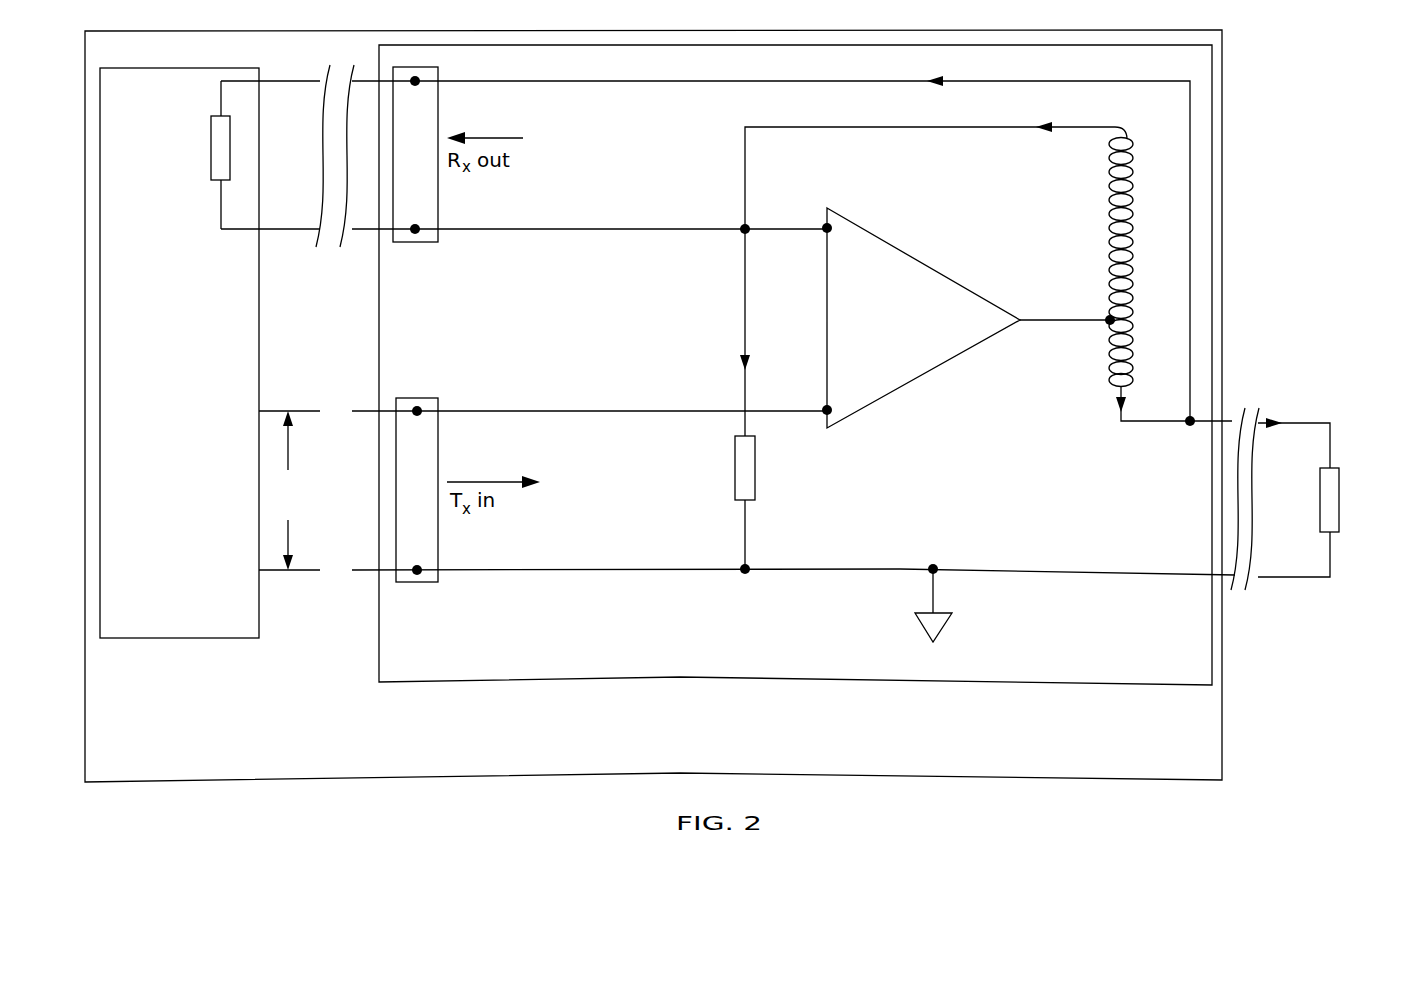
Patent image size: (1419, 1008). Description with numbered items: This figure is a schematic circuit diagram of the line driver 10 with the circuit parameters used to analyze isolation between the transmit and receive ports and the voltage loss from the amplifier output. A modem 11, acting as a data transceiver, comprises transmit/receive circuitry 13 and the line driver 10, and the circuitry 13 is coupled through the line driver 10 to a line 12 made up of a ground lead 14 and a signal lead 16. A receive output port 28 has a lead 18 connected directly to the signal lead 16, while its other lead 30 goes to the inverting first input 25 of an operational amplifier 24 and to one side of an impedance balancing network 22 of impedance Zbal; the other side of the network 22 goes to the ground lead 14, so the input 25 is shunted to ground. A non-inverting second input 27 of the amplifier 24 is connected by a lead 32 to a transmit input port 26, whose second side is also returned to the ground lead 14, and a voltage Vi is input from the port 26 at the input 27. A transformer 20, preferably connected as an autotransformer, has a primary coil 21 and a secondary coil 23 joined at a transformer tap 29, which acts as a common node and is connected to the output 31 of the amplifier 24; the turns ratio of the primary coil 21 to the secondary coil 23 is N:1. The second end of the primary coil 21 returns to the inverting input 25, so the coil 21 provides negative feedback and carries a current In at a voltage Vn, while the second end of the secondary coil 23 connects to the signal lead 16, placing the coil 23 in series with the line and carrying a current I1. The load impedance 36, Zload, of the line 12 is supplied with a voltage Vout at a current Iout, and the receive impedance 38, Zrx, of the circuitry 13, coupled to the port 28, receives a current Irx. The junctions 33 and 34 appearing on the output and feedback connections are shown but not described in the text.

The line driver 10 is at (863, 679).
The modem 11 is at (867, 773).
The line 12 is at (1335, 490).
The transmit/receive circuitry 13 is at (198, 339).
The ground lead 14 is at (1143, 575).
The signal lead 16 is at (1202, 430).
The lead 18 is at (511, 79).
The transformer 20 is at (1114, 287).
The primary coil 21 is at (1135, 182).
The impedance balancing network 22 is at (755, 475).
The secondary coil 23 is at (1130, 354).
The operational amplifier 24 is at (948, 339).
The inverting first input 25 is at (823, 229).
The transmit input port 26 is at (417, 582).
The non-inverting second input 27 is at (826, 412).
The receive output port 28 is at (415, 243).
The transformer tap 29 is at (1110, 319).
The lead 30 is at (566, 232).
The output 31 is at (1021, 322).
The lead 32 is at (578, 408).
The output node 33 is at (1185, 422).
The feedback node 34 is at (744, 226).
The load impedance 36 is at (1299, 512).
The receive impedance 38 is at (210, 172).
The single-turn portion 1 is at (1108, 353).